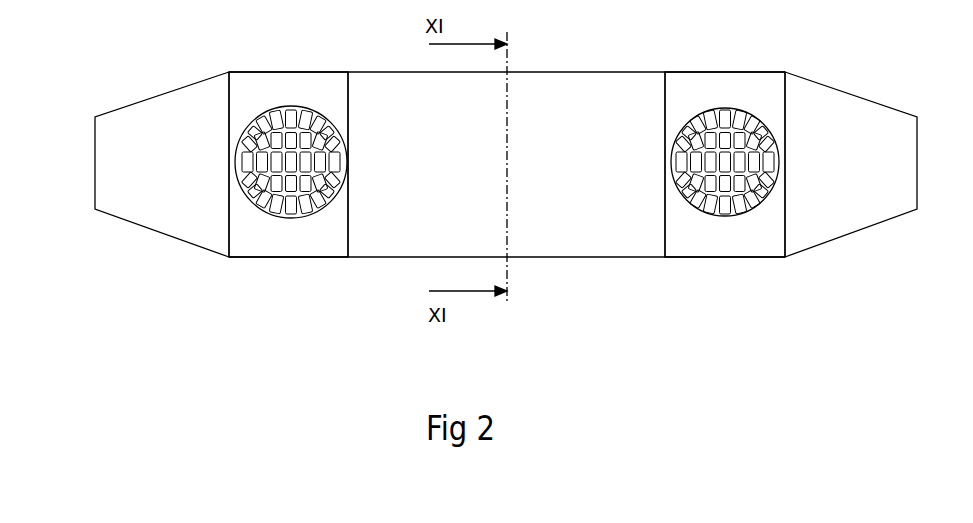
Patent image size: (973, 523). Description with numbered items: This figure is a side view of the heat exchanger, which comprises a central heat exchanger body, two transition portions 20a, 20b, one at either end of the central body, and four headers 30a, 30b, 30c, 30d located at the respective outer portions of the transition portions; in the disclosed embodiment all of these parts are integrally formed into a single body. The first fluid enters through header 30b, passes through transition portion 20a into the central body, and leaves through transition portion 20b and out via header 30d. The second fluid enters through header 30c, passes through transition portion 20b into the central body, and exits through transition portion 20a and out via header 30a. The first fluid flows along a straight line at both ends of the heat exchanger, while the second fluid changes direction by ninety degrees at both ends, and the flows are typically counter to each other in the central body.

The header 30a is at (280, 106).
The header 30b is at (148, 130).
The header 30c is at (720, 106).
The header 30d is at (873, 135).
The transition portion 20a is at (285, 244).
The transition portion 20b is at (720, 233).